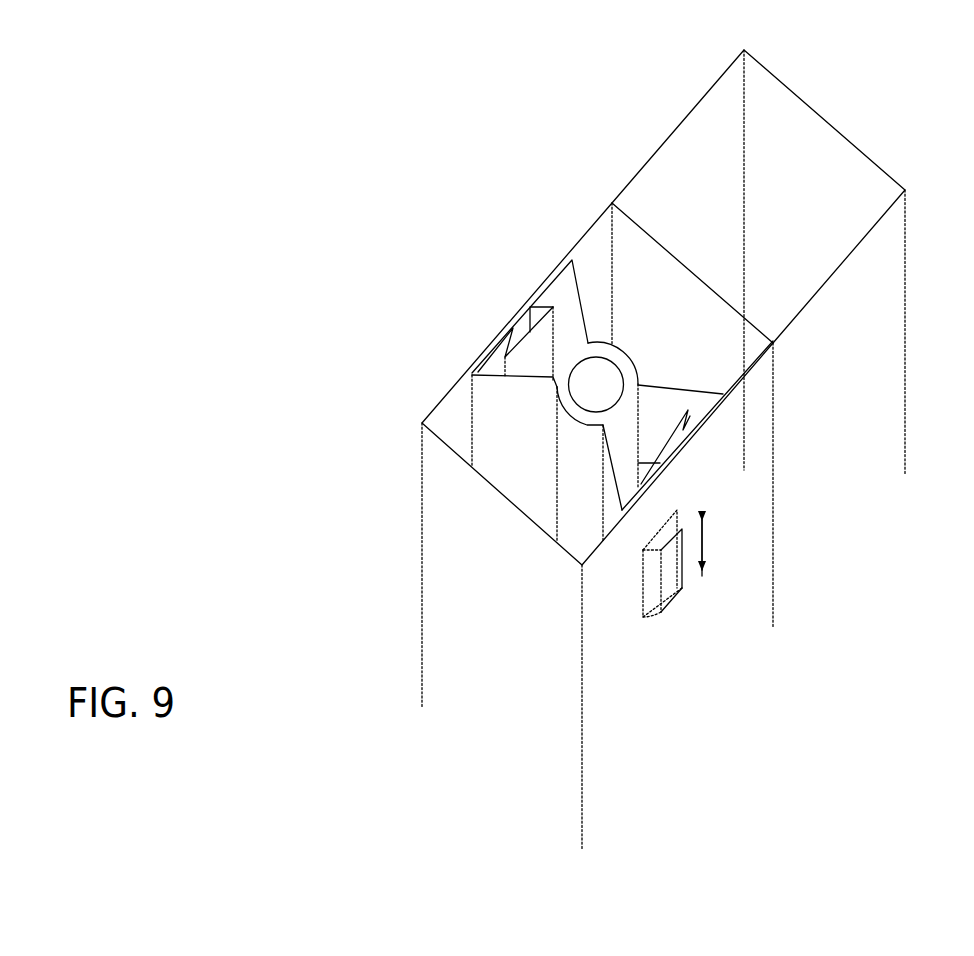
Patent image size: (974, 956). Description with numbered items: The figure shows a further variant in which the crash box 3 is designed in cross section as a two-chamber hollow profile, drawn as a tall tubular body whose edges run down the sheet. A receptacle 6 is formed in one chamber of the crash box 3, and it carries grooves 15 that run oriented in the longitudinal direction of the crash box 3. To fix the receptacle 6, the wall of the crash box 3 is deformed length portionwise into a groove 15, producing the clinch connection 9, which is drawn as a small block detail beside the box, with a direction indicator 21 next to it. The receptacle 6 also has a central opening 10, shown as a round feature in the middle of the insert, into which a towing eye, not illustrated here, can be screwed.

The crash box 3 is at (518, 202).
The receptacle 6 is at (488, 417).
The clinch connection 9 is at (670, 584).
The central opening 10 is at (613, 398).
The groove 15 is at (665, 447).
The direction arrow 21 is at (702, 541).